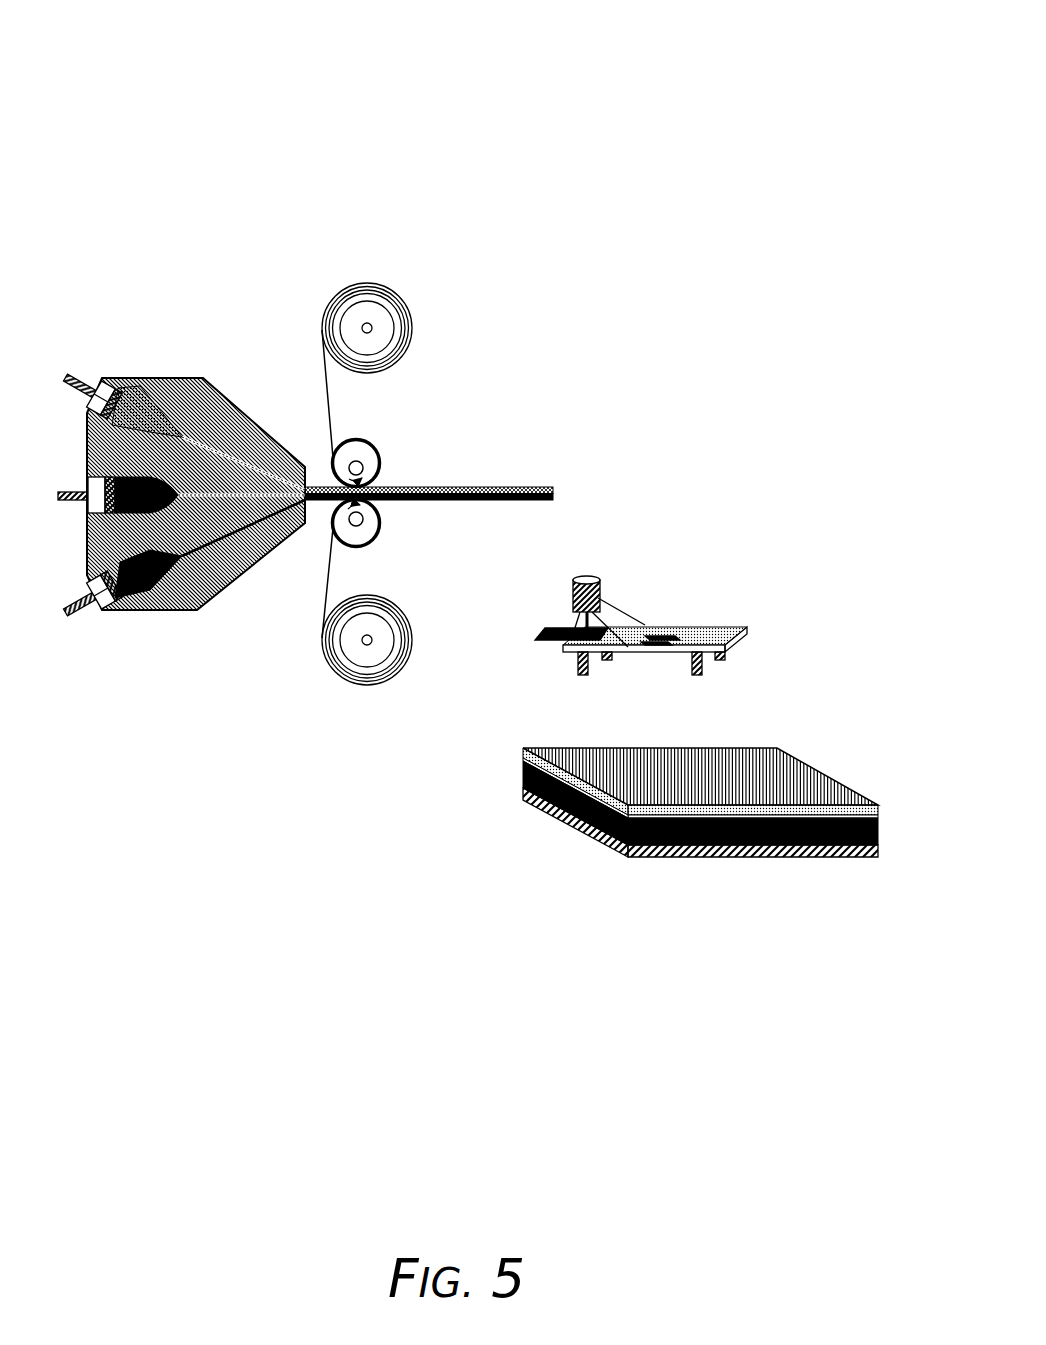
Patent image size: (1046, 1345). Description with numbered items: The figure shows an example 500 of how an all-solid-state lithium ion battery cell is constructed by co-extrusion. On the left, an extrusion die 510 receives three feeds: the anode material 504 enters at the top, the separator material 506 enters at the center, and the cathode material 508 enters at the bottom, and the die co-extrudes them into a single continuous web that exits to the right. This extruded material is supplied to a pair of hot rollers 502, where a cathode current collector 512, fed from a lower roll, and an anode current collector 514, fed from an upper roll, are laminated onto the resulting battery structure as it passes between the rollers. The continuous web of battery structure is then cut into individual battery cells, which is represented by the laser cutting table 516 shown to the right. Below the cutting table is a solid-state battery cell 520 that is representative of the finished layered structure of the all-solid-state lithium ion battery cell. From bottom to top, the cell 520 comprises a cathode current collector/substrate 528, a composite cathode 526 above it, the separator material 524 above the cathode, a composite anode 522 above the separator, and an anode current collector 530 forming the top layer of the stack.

The example 500 is at (673, 65).
The hot rollers 502 is at (358, 440).
The anode material 504 is at (137, 390).
The separator material 506 is at (98, 473).
The cathode material 508 is at (112, 560).
The extrusion die 510 is at (173, 610).
The cathode current collector 512 is at (320, 623).
The anode current collector 514 is at (322, 366).
The laser cutting table 516 is at (682, 597).
The solid-state battery cell 520 is at (662, 763).
The composite anode 522 is at (523, 757).
The separator material 524 is at (523, 768).
The composite cathode 526 is at (523, 780).
The cathode current collector/substrate 528 is at (560, 818).
The anode current collector 530 is at (587, 757).